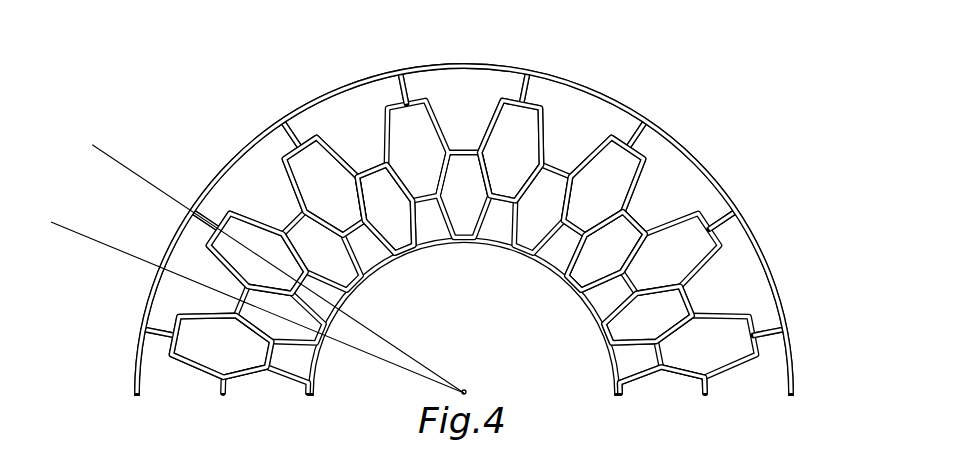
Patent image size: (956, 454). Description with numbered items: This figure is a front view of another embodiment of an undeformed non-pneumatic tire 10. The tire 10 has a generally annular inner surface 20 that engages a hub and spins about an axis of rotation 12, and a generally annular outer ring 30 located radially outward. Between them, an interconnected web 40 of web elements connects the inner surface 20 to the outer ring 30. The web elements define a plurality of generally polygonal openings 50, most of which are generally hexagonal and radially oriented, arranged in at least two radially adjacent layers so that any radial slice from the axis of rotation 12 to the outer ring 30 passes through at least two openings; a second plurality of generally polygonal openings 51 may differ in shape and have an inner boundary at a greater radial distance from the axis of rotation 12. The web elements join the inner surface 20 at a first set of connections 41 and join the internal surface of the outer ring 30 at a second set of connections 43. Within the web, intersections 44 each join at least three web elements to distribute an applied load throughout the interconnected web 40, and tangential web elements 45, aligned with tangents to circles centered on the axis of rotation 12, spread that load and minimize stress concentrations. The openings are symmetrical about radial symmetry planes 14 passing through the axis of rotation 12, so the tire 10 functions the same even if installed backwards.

The non-pneumatic tire 10 is at (728, 106).
The axis of rotation 12 is at (464, 390).
The radial symmetry planes 14 is at (92, 145).
The generally annular inner surface 20 is at (372, 273).
The generally annular outer ring 30 is at (708, 172).
The interconnected web 40 is at (703, 297).
The first set of connections 41 is at (402, 246).
The second set of connections 43 is at (287, 127).
The intersections 44 is at (296, 210).
The tangential web elements 45 is at (500, 200).
The generally polygonal openings 50 is at (625, 360).
The second plurality of generally polygonal openings 51 is at (175, 292).